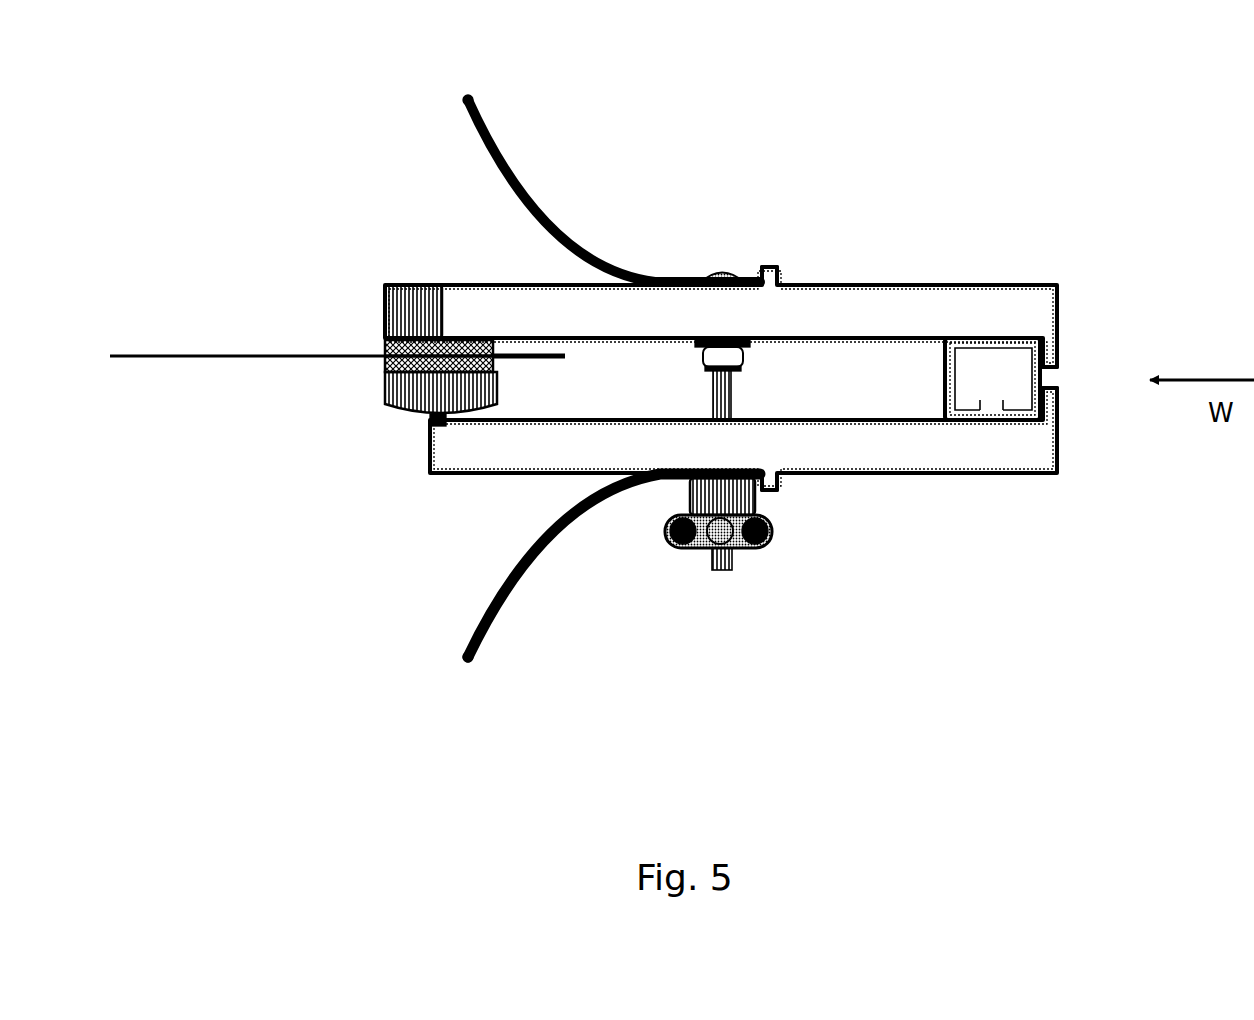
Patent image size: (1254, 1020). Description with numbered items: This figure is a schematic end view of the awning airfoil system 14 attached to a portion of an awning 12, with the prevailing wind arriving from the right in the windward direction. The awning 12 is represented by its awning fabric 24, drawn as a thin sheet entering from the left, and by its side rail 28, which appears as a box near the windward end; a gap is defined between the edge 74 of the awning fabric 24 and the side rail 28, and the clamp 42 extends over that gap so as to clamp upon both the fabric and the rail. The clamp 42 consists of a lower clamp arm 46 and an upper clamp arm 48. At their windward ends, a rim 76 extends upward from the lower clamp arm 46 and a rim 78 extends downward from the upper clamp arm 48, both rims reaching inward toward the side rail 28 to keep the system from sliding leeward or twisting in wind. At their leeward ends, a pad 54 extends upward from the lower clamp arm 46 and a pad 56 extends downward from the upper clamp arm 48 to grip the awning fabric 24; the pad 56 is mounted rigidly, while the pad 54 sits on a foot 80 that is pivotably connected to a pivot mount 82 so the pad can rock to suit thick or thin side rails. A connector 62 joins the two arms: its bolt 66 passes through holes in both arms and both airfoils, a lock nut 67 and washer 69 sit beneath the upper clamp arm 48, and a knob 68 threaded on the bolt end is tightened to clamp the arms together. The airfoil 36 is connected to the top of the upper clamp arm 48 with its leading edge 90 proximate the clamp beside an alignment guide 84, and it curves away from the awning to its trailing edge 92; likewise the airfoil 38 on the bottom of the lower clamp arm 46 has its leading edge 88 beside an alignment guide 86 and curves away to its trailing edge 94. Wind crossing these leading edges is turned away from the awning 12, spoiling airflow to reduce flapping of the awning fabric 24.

The awning 12 is at (238, 338).
The awning airfoil system 14 is at (530, 190).
The awning fabric 24 is at (140, 356).
The side rail 28 is at (1005, 346).
The airfoil 36 is at (600, 256).
The airfoil 38 is at (525, 552).
The clamp 42 is at (822, 283).
The lower clamp arm 46 is at (855, 418).
The upper clamp arm 48 is at (856, 284).
The pad 54 is at (388, 364).
The pad 56 is at (388, 347).
The connector 62 is at (715, 256).
The bolt 66 is at (733, 395).
The lock nut 67 is at (703, 356).
The knob 68 is at (678, 540).
The washer 69 is at (742, 342).
The edge 74 is at (566, 358).
The rim 76 is at (1058, 407).
The rim 78 is at (1052, 362).
The foot 80 is at (408, 414).
The pivot mount 82 is at (428, 426).
The alignment guide 84 is at (767, 266).
The alignment guide 86 is at (778, 484).
The leading edge 88 is at (752, 490).
The leading edge 90 is at (751, 268).
The trailing edge 92 is at (465, 97).
The trailing edge 94 is at (466, 660).